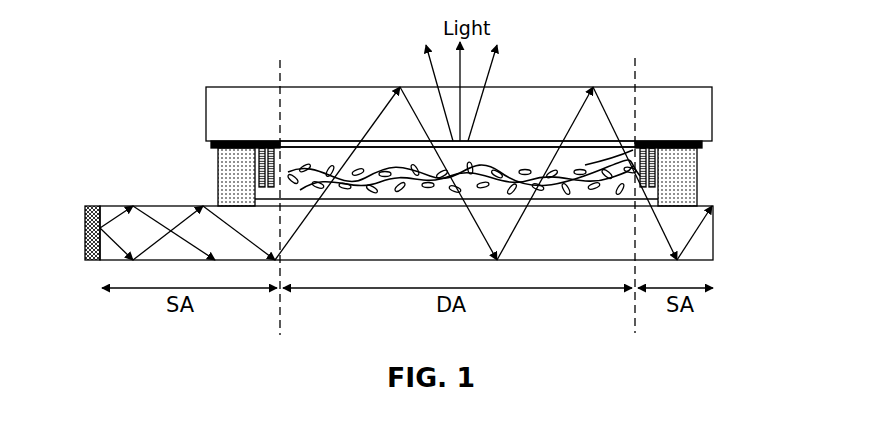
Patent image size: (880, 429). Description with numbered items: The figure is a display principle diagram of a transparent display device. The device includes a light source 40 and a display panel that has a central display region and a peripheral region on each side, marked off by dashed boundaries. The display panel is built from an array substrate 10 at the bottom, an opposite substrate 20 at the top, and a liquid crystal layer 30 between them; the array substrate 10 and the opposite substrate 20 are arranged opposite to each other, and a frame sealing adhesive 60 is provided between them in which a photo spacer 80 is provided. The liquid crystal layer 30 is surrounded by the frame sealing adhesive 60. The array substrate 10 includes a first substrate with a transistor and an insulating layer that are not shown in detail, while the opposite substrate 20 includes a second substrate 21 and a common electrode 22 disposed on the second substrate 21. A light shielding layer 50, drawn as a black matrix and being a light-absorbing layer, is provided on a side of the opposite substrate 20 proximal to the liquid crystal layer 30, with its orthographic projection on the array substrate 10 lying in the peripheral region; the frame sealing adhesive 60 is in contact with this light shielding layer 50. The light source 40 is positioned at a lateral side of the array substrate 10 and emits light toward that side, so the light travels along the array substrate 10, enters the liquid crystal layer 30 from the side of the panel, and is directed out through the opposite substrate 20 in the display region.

The array substrate 10 is at (713, 247).
The opposite substrate 20 is at (421, 96).
The second substrate 21 is at (677, 100).
The common electrode 22 is at (520, 143).
The liquid crystal layer 30 is at (288, 168).
The light source 40 is at (85, 245).
The light shielding layer 50 is at (210, 145).
The frame sealing adhesive 60 is at (235, 180).
The photo spacer 80 is at (648, 172).